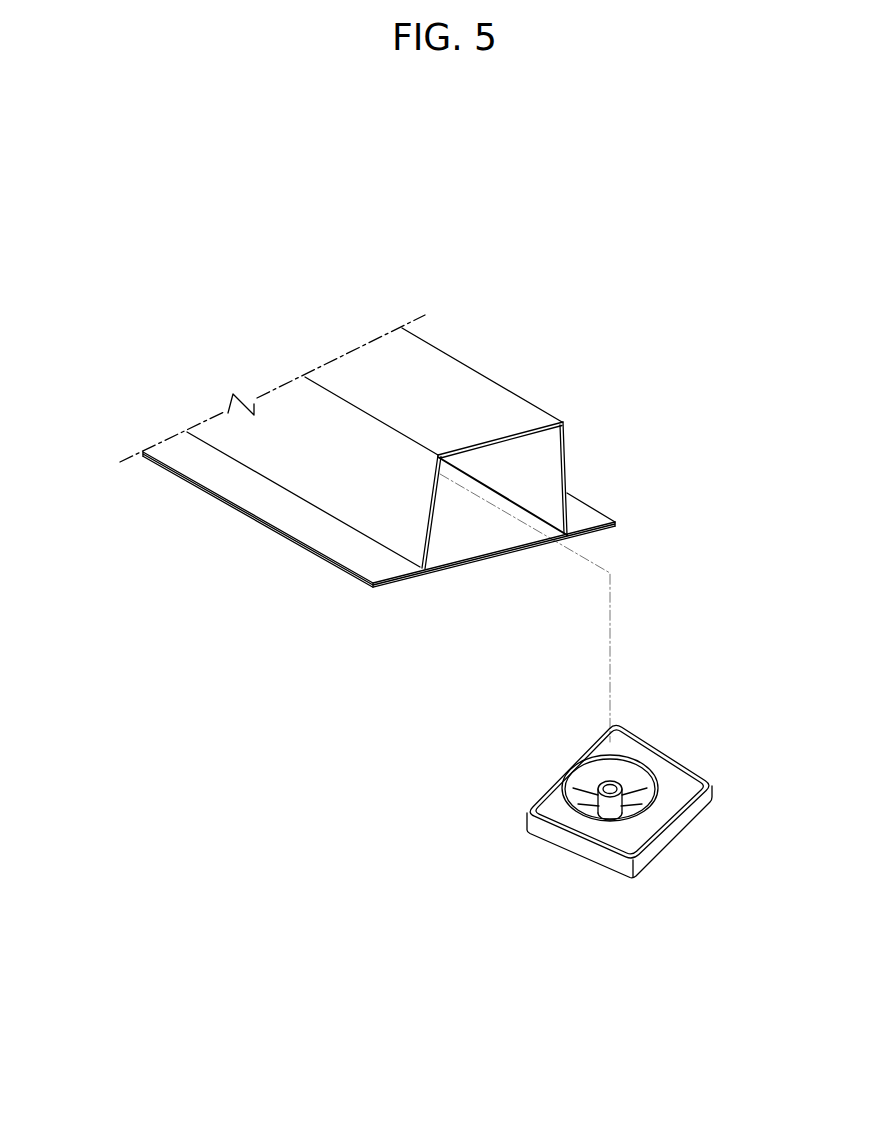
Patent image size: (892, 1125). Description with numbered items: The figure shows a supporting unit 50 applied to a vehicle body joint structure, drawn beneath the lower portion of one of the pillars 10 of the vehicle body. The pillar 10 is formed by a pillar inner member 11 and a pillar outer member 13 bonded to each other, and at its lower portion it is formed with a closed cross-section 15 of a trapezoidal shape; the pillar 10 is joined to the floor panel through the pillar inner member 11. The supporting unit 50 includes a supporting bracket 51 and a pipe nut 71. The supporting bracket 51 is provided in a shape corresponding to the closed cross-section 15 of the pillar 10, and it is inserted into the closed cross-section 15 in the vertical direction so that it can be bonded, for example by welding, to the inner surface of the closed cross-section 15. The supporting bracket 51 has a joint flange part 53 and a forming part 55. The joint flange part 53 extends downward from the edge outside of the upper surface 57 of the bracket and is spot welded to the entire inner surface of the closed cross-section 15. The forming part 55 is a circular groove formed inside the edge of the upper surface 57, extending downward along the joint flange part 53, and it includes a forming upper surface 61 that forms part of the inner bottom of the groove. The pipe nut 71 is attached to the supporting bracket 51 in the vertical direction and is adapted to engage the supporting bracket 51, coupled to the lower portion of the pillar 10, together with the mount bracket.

The pillar 10 is at (390, 528).
The pillar inner member 11 is at (453, 570).
The pillar outer member 13 is at (463, 377).
The closed cross-section 15 is at (548, 467).
The supporting unit 50 is at (614, 823).
The supporting bracket 51 is at (577, 858).
The joint flange part 53 is at (690, 823).
The forming part 55 is at (647, 781).
The upper surface 57 is at (685, 783).
The forming upper surface 61 is at (588, 805).
The pipe nut 71 is at (609, 818).